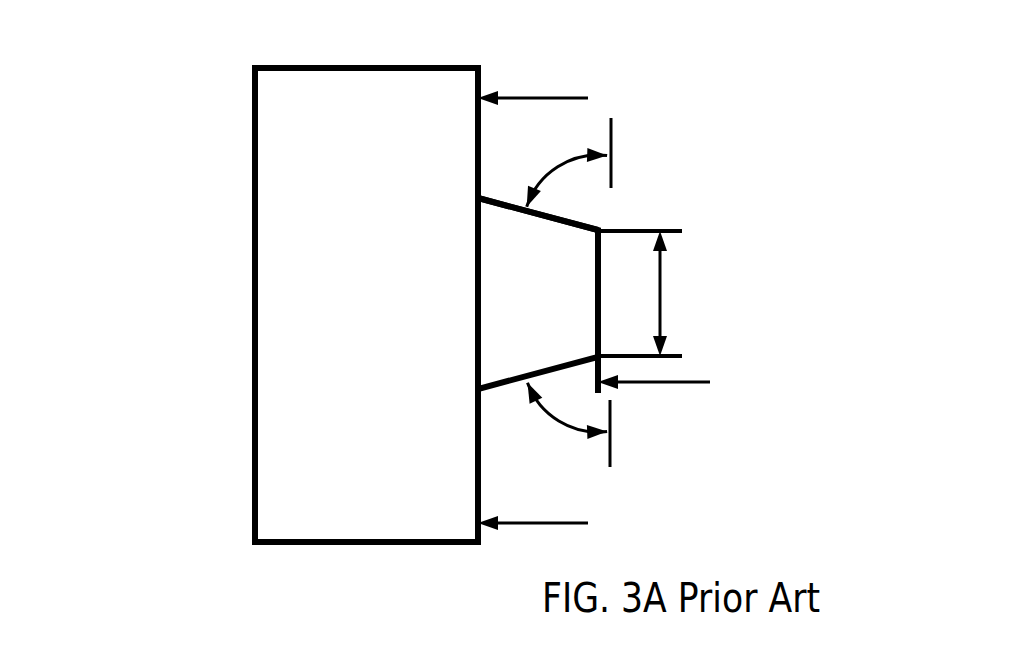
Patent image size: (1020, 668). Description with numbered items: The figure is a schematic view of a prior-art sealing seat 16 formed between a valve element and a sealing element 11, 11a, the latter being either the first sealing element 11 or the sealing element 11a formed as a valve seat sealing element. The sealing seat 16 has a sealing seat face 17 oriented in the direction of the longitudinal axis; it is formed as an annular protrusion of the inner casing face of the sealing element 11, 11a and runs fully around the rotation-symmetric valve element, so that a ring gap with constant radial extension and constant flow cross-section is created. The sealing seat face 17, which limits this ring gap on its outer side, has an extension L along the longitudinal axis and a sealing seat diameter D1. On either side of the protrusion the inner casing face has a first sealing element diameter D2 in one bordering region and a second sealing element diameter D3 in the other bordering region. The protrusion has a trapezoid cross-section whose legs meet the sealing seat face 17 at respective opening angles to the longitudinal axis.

The first sealing element 11 is at (298, 200).
The valve seat sealing element 11a is at (298, 200).
The sealing seat 16 is at (645, 86).
The sealing seat face 17 is at (602, 260).
The sealing seat diameter D1 is at (693, 387).
The first sealing element diameter D2 is at (570, 93).
The second sealing element diameter D3 is at (577, 522).
The extension of the sealing seat face L is at (665, 283).